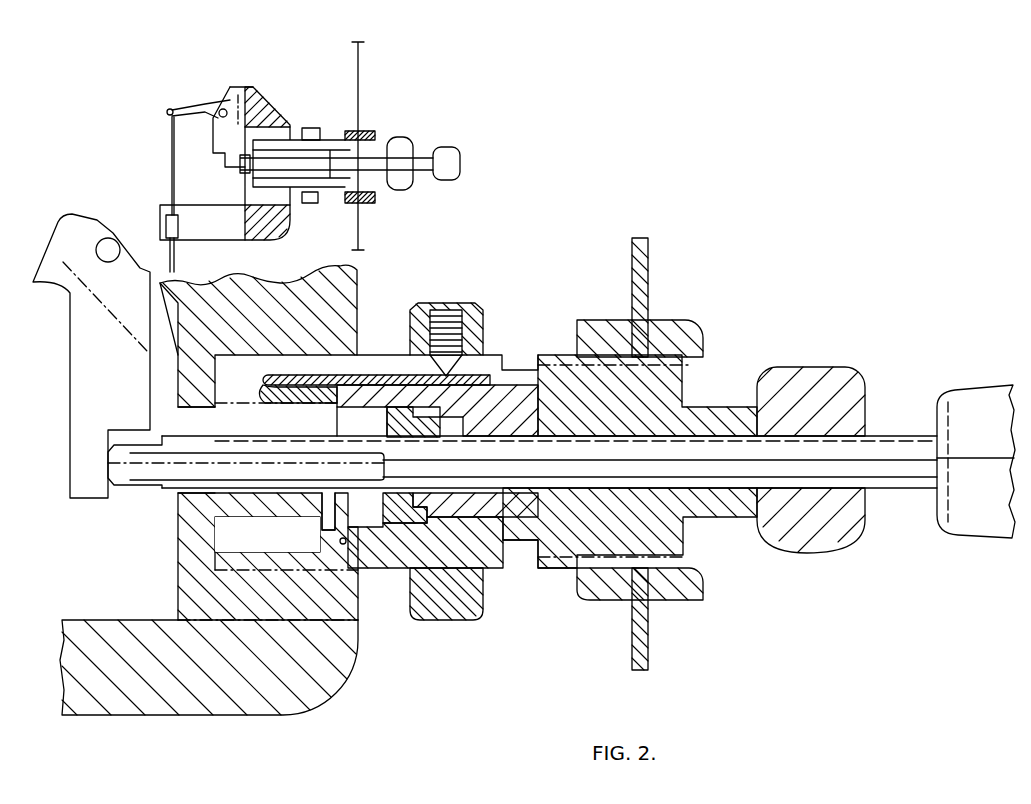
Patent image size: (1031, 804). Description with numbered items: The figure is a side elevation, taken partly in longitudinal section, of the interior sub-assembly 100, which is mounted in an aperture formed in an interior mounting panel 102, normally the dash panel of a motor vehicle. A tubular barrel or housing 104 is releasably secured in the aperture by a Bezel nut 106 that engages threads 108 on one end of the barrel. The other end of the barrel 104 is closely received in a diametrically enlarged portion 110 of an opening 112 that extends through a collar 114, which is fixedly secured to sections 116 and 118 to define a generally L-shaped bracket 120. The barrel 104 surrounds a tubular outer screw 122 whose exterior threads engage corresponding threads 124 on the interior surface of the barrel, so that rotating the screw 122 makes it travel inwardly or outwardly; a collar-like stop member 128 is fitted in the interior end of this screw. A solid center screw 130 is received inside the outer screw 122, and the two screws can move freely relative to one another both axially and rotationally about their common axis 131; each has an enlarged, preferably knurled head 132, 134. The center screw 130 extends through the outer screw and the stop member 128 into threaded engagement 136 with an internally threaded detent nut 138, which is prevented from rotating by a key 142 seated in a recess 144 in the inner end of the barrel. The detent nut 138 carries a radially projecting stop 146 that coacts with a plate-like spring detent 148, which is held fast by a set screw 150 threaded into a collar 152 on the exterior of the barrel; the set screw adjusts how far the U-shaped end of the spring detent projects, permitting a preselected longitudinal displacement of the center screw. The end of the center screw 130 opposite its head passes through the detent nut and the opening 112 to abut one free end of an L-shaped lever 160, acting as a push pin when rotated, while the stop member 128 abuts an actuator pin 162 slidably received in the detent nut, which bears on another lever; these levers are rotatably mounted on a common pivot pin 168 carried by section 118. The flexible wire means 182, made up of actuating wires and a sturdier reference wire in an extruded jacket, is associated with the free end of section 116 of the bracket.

The interior sub-assembly 100 is at (688, 190).
The interior mounting panel 102 is at (636, 626).
The tubular barrel or housing 104 is at (496, 572).
The Bezel nut 106 is at (698, 326).
The threads 108 is at (560, 566).
The diametrically enlarged portion 110 is at (260, 567).
The opening 112 is at (188, 512).
The collar 114 is at (277, 580).
The section of bracket 116 is at (228, 213).
The section of bracket 118 is at (309, 284).
The L-shaped bracket 120 is at (262, 93).
The tubular outer screw 122 is at (705, 412).
The threads 124 is at (485, 432).
The stop member 128 is at (405, 432).
The center screw 130 is at (885, 434).
The common axis 131 is at (693, 462).
The enlarged end or head 132 is at (810, 548).
The enlarged end or head 134 is at (996, 524).
The threaded engagement 136 is at (238, 440).
The detent nut 138 is at (304, 426).
The key 142 is at (305, 542).
The recess 144 is at (346, 544).
The stop 146 is at (252, 416).
The spring detent 148 is at (352, 376).
The set screw 150 is at (446, 314).
The collar 152 is at (468, 312).
The L-shaped lever 160 is at (222, 136).
The actuator pin 162 is at (131, 472).
The common pivot pin 168 is at (110, 240).
The flexible wire means 182 is at (175, 246).